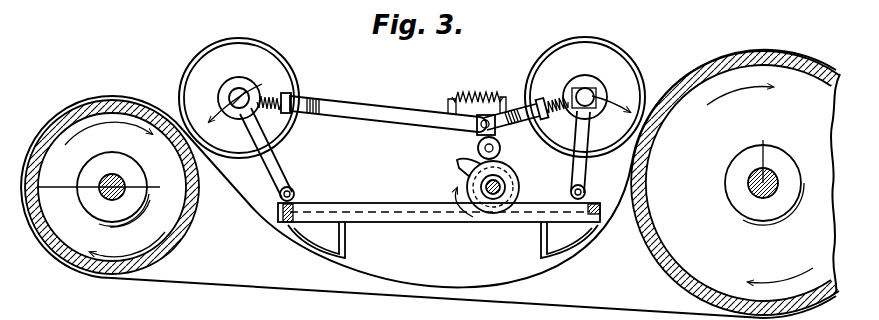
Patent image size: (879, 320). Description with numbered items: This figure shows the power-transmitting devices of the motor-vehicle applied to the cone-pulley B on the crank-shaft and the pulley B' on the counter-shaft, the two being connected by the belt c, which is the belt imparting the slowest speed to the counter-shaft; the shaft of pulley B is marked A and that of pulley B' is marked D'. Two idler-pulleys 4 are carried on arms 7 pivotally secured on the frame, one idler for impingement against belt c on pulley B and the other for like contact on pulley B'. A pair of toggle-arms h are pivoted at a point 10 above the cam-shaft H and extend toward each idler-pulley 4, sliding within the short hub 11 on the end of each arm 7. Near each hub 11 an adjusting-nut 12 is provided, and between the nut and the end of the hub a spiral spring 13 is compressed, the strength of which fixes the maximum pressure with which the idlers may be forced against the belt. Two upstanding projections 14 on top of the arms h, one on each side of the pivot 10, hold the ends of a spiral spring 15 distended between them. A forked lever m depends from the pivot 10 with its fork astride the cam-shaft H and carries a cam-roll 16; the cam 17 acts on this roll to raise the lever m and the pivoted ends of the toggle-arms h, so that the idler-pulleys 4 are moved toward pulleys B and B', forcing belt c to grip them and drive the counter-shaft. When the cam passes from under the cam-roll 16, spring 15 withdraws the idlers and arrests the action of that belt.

The idler-pulley 4 is at (412, 97).
The arm 7 is at (426, 165).
The pivot-point 10 is at (464, 135).
The short hub 11 is at (412, 92).
The adjusting-nut 12 is at (420, 133).
The spiral spring 13 is at (415, 100).
The upstanding projection 14 is at (476, 113).
The spiral spring 15 is at (485, 112).
The cam-roll 16 is at (521, 183).
The cam 17 is at (435, 188).
The toggle-arm h is at (415, 96).
The forked lever m is at (469, 184).
The cam-shaft H is at (439, 230).
The shaft of wheel B A is at (128, 189).
The cone-pulley B is at (112, 187).
The counter-shaft pulley B' is at (735, 183).
The shaft of wheel B' D' is at (764, 169).
The belt c is at (246, 206).